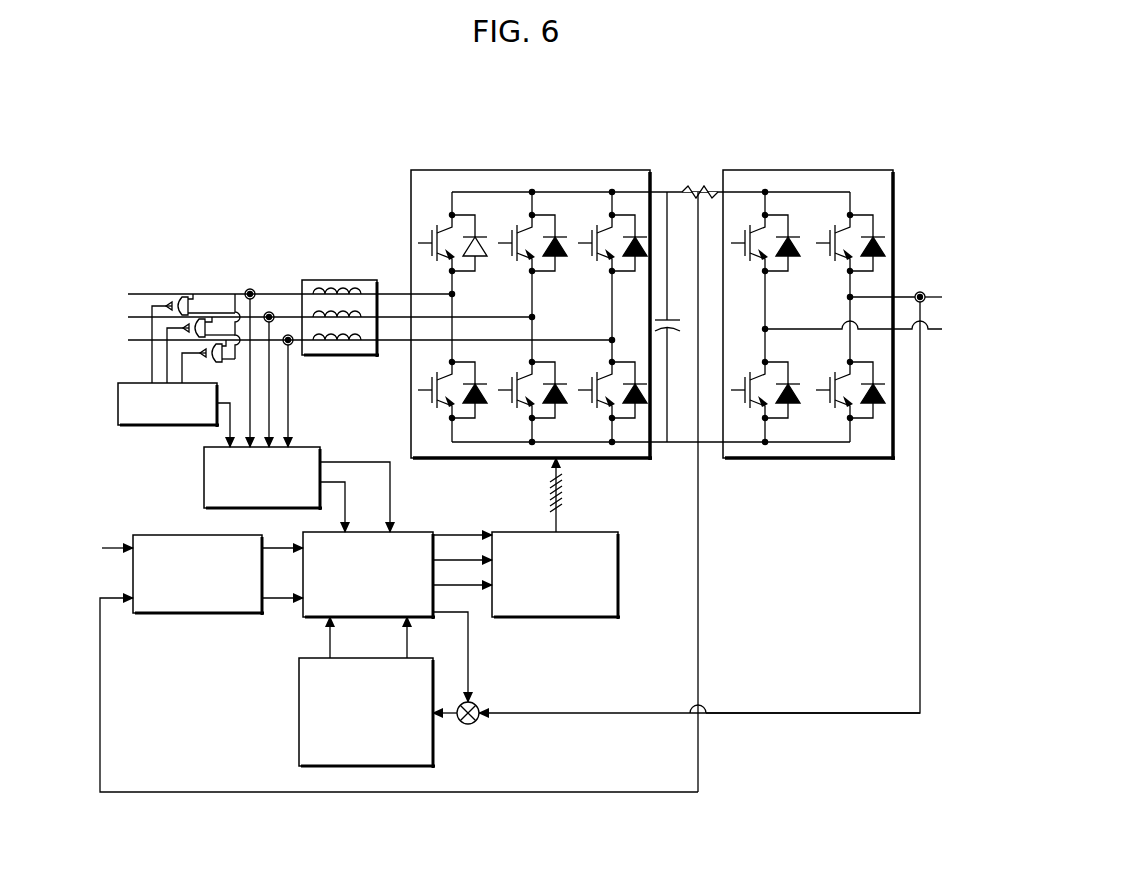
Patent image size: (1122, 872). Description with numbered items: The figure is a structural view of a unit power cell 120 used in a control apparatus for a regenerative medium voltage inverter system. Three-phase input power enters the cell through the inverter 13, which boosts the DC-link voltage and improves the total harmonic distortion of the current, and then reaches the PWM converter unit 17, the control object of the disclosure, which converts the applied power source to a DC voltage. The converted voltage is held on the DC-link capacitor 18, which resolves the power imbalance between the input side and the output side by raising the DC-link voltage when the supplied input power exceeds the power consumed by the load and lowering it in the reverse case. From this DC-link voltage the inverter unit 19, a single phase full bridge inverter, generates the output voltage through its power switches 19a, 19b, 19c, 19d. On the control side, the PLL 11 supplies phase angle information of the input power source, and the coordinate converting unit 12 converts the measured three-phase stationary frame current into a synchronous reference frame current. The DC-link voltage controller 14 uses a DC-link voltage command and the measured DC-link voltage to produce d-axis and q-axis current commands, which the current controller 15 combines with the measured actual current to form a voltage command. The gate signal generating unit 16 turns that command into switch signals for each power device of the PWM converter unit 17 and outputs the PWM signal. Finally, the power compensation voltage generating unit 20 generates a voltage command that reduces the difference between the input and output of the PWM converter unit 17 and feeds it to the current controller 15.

The PLL 11 is at (118, 407).
The coordinate converting unit 12 is at (204, 474).
The inverter 13 is at (341, 280).
The DC-link voltage controller 14 is at (155, 535).
The current controller 15 is at (416, 532).
The gate signal generating unit 16 is at (603, 532).
The PWM converter unit 17 is at (532, 170).
The DC-link capacitor 18 is at (673, 318).
The inverter unit 19 is at (807, 170).
The power switch 19a is at (757, 230).
The power switch 19b is at (757, 377).
The power switch 19c is at (842, 230).
The power switch 19d is at (842, 377).
The power compensation voltage generating unit 20 is at (299, 688).
The unit power cell 120 is at (728, 105).